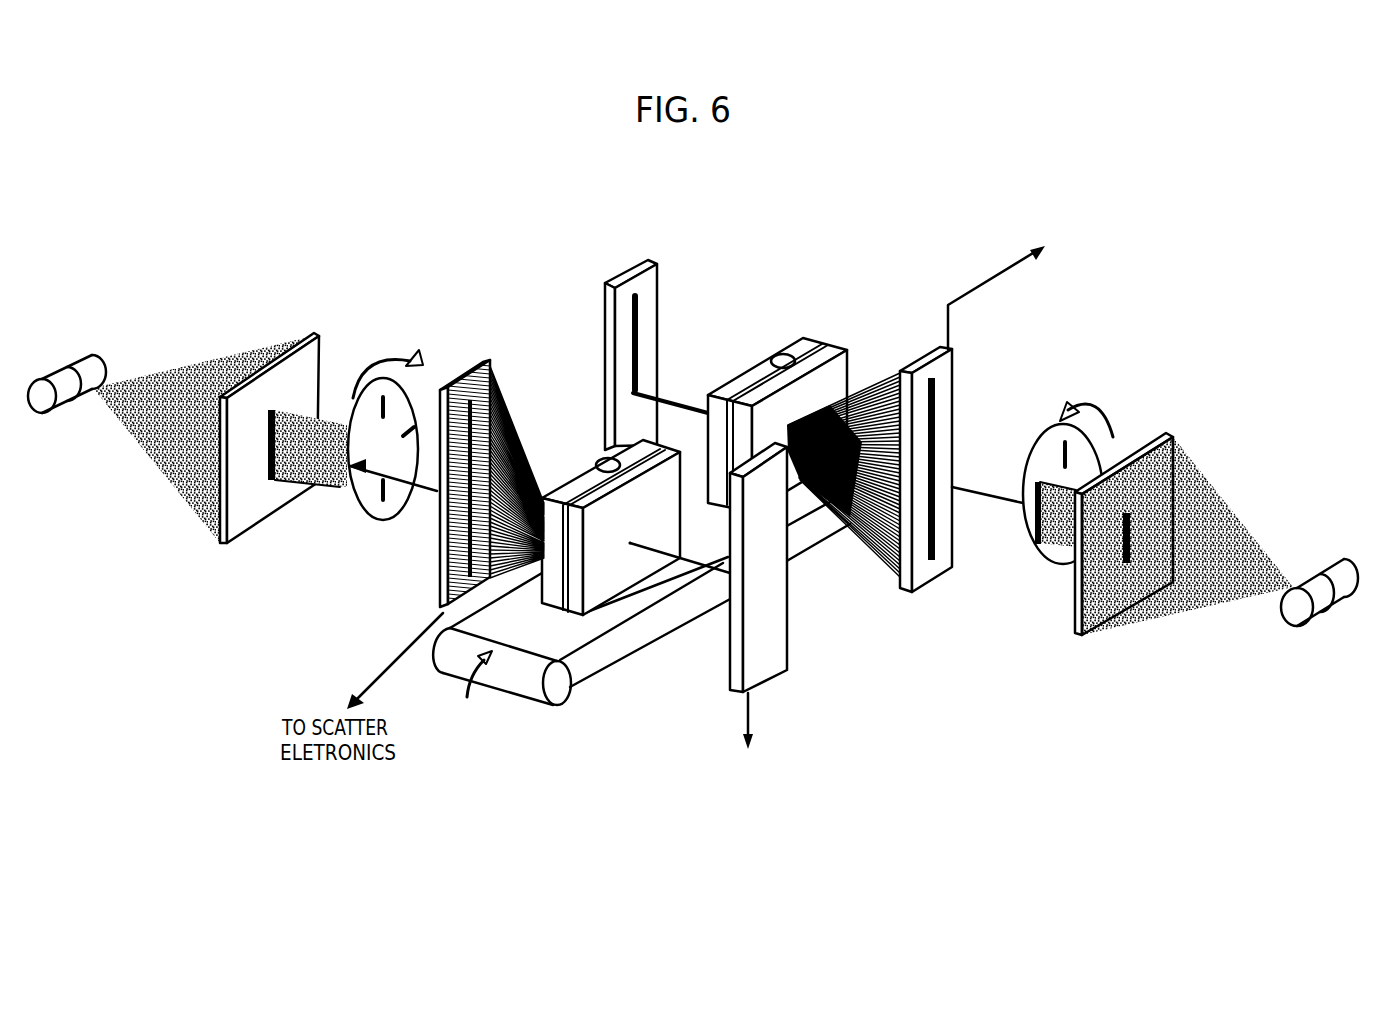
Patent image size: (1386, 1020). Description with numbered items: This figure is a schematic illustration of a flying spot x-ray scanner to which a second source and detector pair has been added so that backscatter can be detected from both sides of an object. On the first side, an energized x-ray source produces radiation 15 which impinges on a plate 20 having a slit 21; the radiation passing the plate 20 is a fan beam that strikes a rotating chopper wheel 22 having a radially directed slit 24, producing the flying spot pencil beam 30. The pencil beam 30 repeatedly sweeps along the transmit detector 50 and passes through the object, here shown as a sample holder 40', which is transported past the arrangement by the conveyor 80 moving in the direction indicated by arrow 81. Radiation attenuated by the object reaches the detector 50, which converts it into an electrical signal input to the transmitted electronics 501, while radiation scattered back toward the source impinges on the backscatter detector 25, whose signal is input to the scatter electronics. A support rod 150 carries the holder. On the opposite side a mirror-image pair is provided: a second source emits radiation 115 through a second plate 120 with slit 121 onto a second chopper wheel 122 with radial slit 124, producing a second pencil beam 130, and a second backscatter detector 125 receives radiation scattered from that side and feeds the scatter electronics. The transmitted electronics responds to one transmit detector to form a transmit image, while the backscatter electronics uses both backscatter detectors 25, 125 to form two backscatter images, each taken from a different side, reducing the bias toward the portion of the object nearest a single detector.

The radiation 15 is at (203, 353).
The plate 20 is at (318, 353).
The slit 21 is at (327, 491).
The chopper wheel 22 is at (417, 382).
The radially directed slit 24 is at (370, 398).
The backscatter detector 25 is at (440, 584).
The flying spot pencil beam 30 is at (419, 491).
The second sample holder 40' is at (800, 416).
The transmit detector 50 is at (775, 645).
The conveyor 80 is at (522, 684).
The belt travel direction 81 is at (467, 693).
The second X-ray source 115 is at (1262, 519).
The second collimator plate 120 is at (1075, 631).
The second collimator slit 121 is at (1040, 551).
The second rotating chopper disk 122 is at (1057, 441).
The second disk rotation direction 124 is at (1060, 456).
The second scatter detector 125 is at (958, 383).
The second beam axis 130 is at (1003, 498).
The support rod 150 is at (631, 272).
The transmitted electronics 501 is at (834, 751).